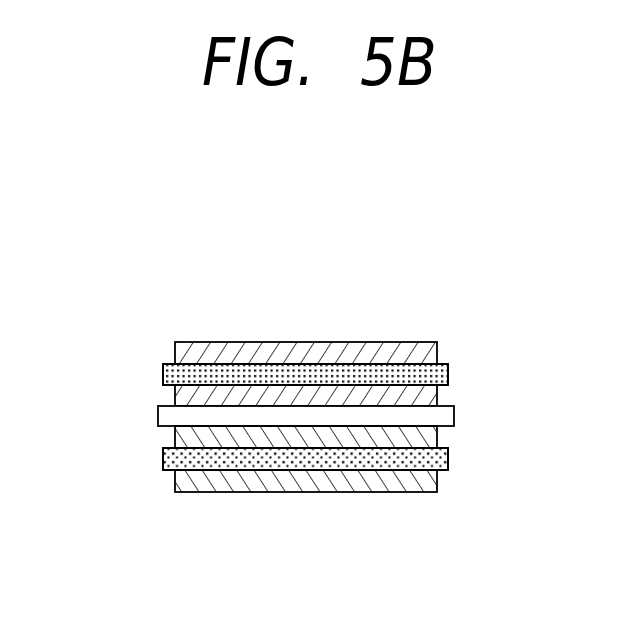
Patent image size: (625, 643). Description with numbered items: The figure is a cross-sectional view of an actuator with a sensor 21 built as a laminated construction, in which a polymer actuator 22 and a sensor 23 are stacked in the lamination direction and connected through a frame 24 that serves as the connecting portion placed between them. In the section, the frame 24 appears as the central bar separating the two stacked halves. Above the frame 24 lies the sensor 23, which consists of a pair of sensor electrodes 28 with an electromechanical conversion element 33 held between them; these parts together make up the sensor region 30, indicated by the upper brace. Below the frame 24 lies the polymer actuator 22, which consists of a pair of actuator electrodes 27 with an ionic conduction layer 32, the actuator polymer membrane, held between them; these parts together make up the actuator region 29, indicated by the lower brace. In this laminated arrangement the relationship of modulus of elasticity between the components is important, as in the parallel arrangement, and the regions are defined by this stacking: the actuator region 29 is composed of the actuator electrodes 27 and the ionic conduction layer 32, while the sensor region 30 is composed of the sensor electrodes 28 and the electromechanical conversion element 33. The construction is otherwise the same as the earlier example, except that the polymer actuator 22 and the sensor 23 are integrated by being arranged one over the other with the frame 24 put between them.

The actuator with a sensor 21 is at (170, 208).
The actuator 22 is at (180, 518).
The sensor 23 is at (182, 310).
The frame 24 is at (160, 414).
The actuator electrodes 27 is at (373, 437).
The sensor electrodes 28 is at (375, 392).
The actuator region 29 is at (493, 422).
The sensor region 30 is at (493, 342).
The ionic conduction layer 32 is at (262, 460).
The electromechanical conversion element 33 is at (272, 372).